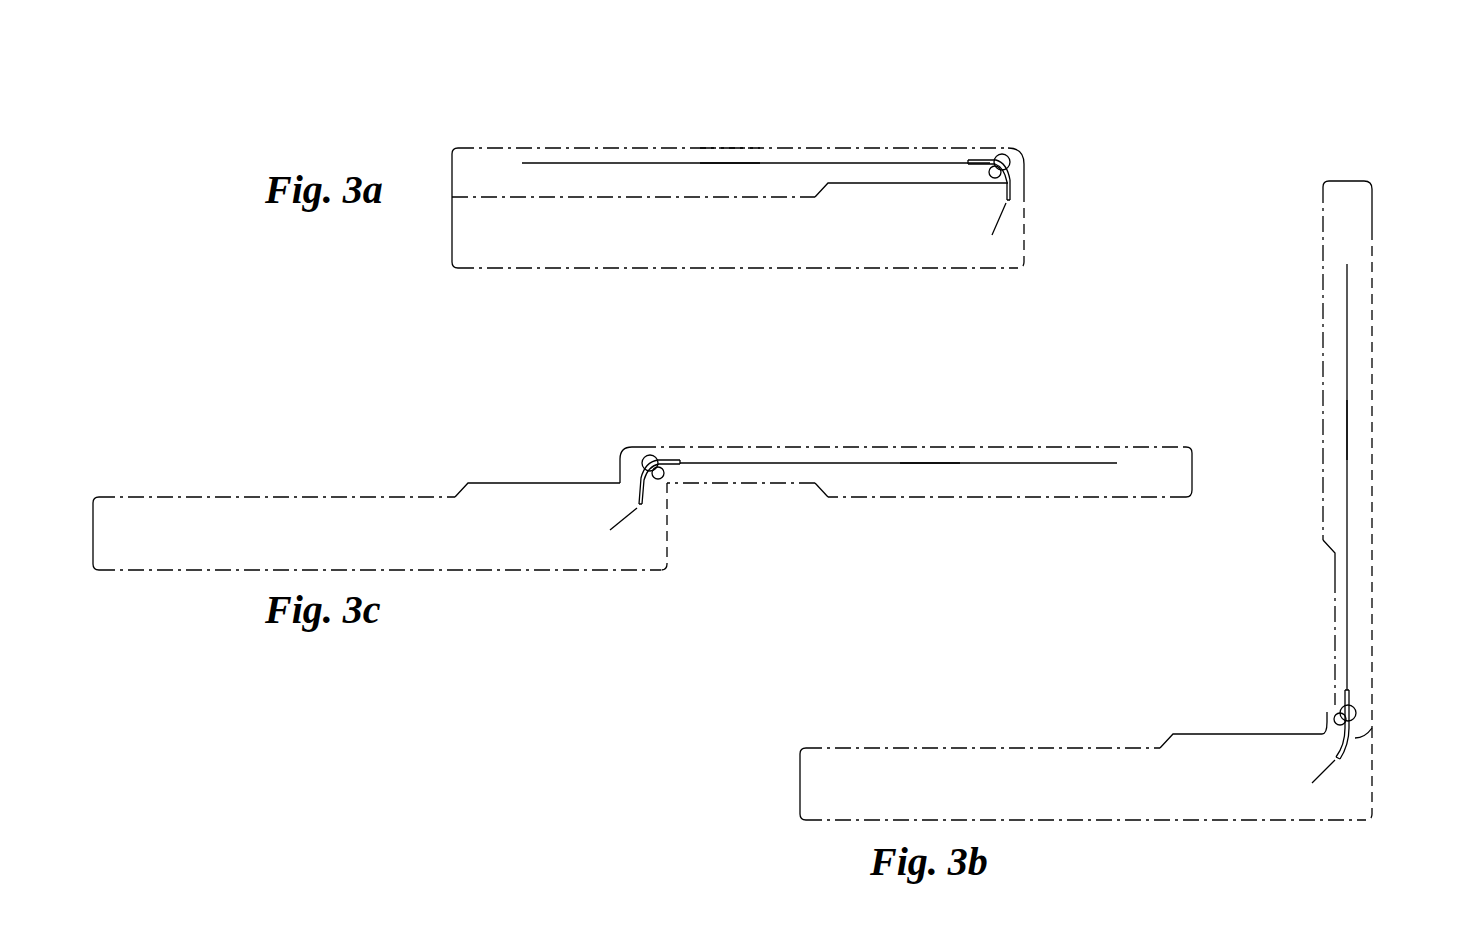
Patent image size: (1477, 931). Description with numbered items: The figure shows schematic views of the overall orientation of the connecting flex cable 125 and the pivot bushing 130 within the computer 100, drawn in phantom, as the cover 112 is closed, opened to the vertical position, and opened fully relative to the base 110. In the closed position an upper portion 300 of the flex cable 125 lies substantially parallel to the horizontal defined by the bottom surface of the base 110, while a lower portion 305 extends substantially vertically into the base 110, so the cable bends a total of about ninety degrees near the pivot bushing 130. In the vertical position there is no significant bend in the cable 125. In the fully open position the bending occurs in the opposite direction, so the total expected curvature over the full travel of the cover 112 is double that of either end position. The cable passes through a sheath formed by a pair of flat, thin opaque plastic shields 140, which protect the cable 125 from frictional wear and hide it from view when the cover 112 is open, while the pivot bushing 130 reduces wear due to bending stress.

In FIG. 3A, the computer 100 is at (485, 143).
In FIG. 3B, the computer 100 is at (926, 742).
In FIG. 3C, the computer 100 is at (182, 490).
In FIG. 3A, the base 110 is at (843, 270).
In FIG. 3B, the base 110 is at (1188, 825).
In FIG. 3C, the base 110 is at (312, 493).
In FIG. 3A, the cover 112 is at (768, 143).
In FIG. 3B, the cover 112 is at (1374, 288).
In FIG. 3C, the cover 112 is at (806, 446).
In FIG. 3A, the flex cable 125 is at (623, 155).
In FIG. 3B, the flex cable 125 is at (1340, 328).
In FIG. 3C, the flex cable 125 is at (1013, 455).
In FIG. 3A, the pivot bushing 130 is at (1005, 157).
In FIG. 3B, the pivot bushing 130 is at (1340, 712).
In FIG. 3C, the pivot bushing 130 is at (645, 458).
In FIG. 3A, the shields 140 is at (1012, 190).
In FIG. 3B, the shields 140 is at (1348, 748).
In FIG. 3C, the shields 140 is at (672, 460).
In FIG. 3A, the upper portion of the flex cable 300 is at (703, 165).
In FIG. 3B, the upper portion of the flex cable 300 is at (1348, 443).
In FIG. 3C, the upper portion of the flex cable 300 is at (922, 467).
In FIG. 3A, the lower portion of the flex cable 305 is at (1003, 215).
In FIG. 3B, the lower portion of the flex cable 305 is at (1335, 773).
In FIG. 3C, the lower portion of the flex cable 305 is at (632, 512).